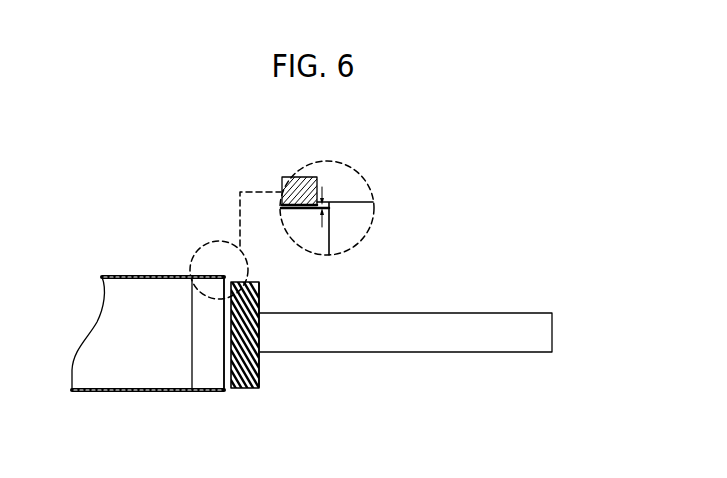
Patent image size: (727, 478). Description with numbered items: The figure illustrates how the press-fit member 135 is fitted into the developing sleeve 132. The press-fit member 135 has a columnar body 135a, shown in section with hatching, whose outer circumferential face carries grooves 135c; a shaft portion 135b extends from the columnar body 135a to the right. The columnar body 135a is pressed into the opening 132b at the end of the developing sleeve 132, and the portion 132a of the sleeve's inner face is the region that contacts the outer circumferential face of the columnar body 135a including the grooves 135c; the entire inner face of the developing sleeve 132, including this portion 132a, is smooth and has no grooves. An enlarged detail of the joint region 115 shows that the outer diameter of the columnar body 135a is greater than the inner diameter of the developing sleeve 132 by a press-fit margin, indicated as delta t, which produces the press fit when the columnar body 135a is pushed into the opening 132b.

The connecting portion 115 is at (171, 232).
The developing sleeve 132 is at (138, 365).
The portion of the inner face of the developing sleeve 132a is at (198, 336).
The opening of the developing sleeve 132b is at (205, 382).
The press-fit member 135 is at (332, 306).
The columnar body 135a is at (238, 391).
The shaft portion 135b is at (397, 344).
The grooves 135c is at (258, 358).